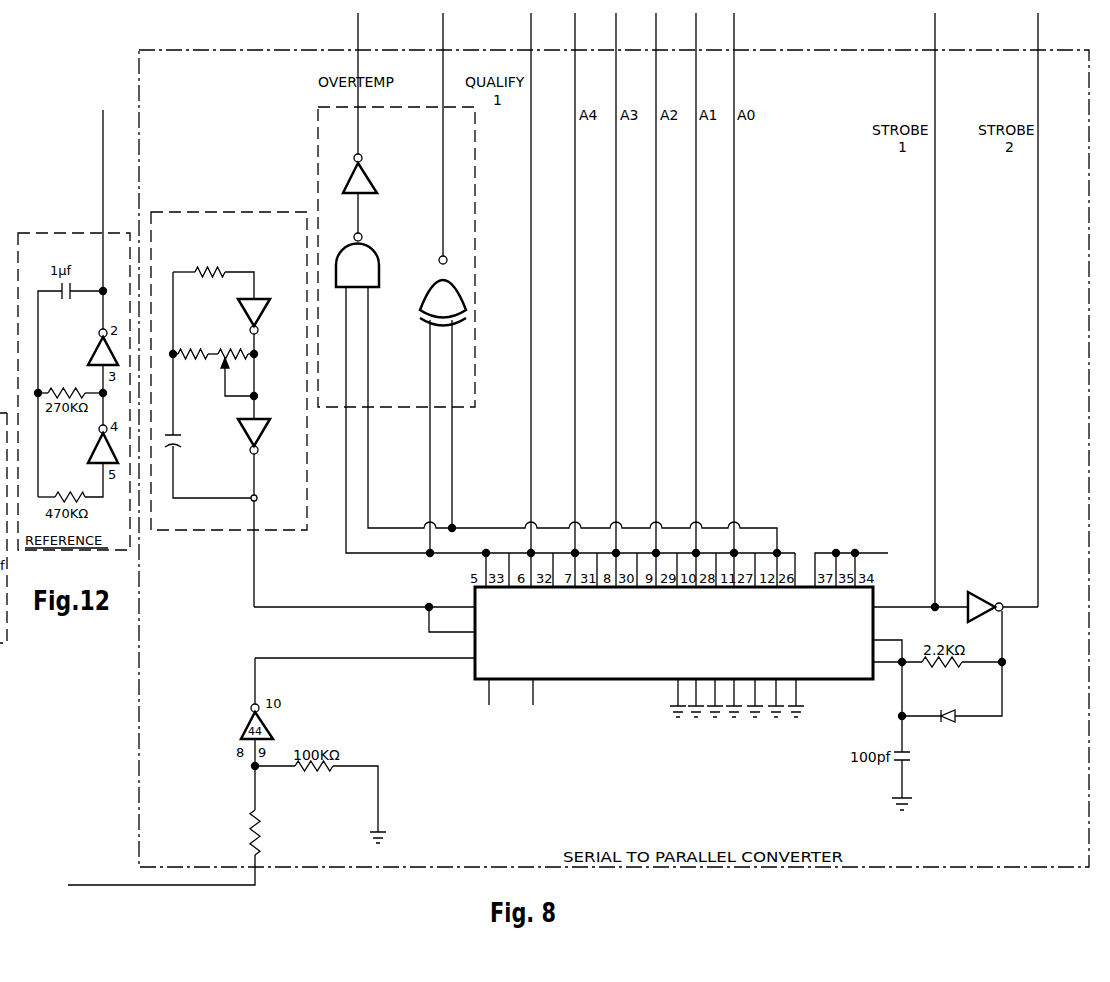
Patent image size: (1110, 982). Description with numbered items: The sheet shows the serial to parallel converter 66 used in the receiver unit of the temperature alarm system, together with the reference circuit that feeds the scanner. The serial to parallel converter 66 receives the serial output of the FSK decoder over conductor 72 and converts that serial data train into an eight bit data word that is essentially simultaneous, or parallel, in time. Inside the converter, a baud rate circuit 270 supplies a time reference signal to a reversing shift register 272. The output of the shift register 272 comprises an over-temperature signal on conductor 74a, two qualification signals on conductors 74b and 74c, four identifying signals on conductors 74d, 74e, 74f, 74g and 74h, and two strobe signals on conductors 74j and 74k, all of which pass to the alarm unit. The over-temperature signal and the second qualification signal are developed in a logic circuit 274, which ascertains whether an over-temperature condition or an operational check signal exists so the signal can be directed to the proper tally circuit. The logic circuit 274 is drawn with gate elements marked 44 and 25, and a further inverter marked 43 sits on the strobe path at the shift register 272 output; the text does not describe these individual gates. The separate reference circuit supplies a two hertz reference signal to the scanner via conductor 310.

In FIG. 8, the serial to parallel converter 66 is at (930, 867).
In FIG. 8, the conductor 72 is at (111, 885).
In FIG. 8, the conductor 74a is at (358, 37).
In FIG. 8, the conductor 74b is at (443, 45).
In FIG. 8, the conductor 74c is at (531, 37).
In FIG. 8, the conductor 74d is at (575, 43).
In FIG. 8, the conductor 74e is at (616, 37).
In FIG. 8, the conductor 74f is at (656, 37).
In FIG. 8, the conductor 74g is at (696, 37).
In FIG. 8, the conductor 74h is at (734, 37).
In FIG. 8, the conductor 74j is at (935, 38).
In FIG. 8, the conductor 74k is at (1038, 38).
In FIG. 8, the baud rate circuit 270 is at (166, 531).
In FIG. 8, the reversing shift register 272 is at (608, 681).
In FIG. 8, the logic circuit 274 is at (475, 195).
In FIG. 8, the inverter / NAND gate 44 is at (356, 230).
In FIG. 8, the exclusive OR gate 25 is at (441, 294).
In FIG. 8, the inverter 43 is at (981, 603).
In FIG. 12, the conductor 310 is at (103, 170).